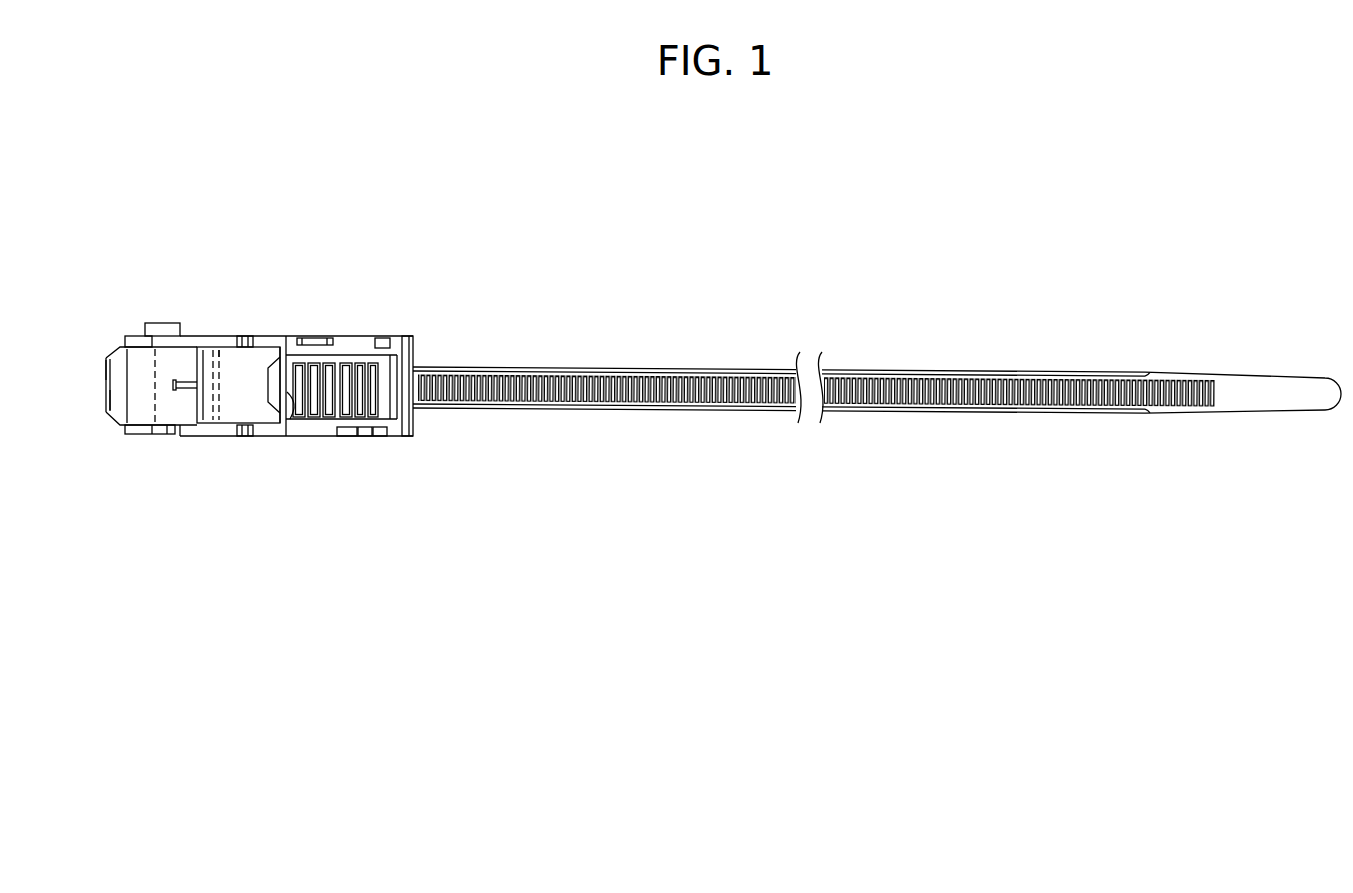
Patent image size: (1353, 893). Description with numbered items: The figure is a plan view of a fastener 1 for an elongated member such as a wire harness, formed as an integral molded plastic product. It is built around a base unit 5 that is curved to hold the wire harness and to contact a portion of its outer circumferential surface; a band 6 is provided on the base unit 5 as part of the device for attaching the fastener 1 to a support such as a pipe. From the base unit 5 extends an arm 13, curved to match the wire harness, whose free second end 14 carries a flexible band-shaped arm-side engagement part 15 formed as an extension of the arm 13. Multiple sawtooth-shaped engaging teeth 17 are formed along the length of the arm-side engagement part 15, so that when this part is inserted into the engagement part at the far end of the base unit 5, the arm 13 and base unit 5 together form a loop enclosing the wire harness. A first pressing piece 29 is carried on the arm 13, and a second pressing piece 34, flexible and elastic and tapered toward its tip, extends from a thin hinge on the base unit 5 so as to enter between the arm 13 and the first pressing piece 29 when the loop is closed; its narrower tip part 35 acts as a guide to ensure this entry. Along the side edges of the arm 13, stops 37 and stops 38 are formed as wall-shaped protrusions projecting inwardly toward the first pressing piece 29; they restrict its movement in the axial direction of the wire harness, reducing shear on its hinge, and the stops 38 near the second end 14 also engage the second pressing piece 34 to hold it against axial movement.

The fastener 1 is at (313, 255).
The base unit 5 is at (192, 430).
The band 6 is at (697, 409).
The arm 13 is at (298, 428).
The second end 14 is at (409, 437).
The arm-side engagement part 15 is at (286, 354).
The engaging teeth 17 is at (290, 418).
The first pressing piece 29 is at (221, 348).
The second pressing piece 34 is at (118, 398).
The tip part 35 is at (108, 374).
The stops 37 is at (345, 435).
The stops 38 is at (320, 337).